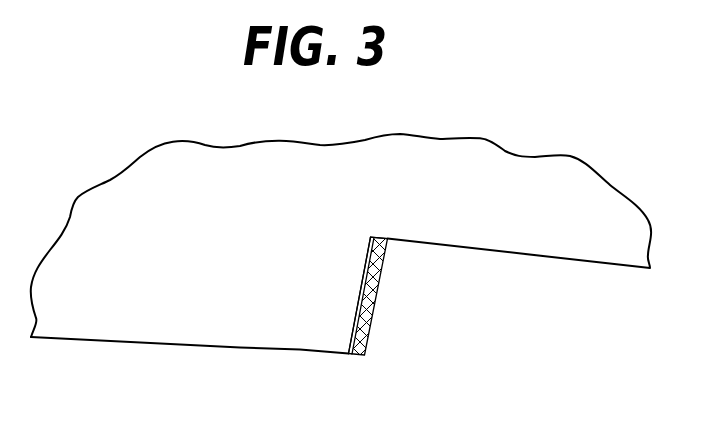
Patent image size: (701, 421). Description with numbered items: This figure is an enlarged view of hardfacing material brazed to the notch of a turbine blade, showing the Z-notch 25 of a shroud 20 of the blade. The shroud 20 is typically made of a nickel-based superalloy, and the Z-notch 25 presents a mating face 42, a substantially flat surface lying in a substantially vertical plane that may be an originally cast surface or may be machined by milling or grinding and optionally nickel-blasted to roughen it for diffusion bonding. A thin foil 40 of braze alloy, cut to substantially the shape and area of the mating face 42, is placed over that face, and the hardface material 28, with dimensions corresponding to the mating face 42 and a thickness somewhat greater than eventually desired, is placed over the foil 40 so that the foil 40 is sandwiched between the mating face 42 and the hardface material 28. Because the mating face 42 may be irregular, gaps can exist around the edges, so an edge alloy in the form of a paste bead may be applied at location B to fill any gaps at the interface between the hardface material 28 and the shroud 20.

The shroud 20 is at (525, 167).
The Z-notch 25 is at (370, 237).
The hardface material 28 is at (377, 290).
The thin foil 40 is at (365, 285).
The mating face 42 is at (353, 315).
The location B is at (353, 362).